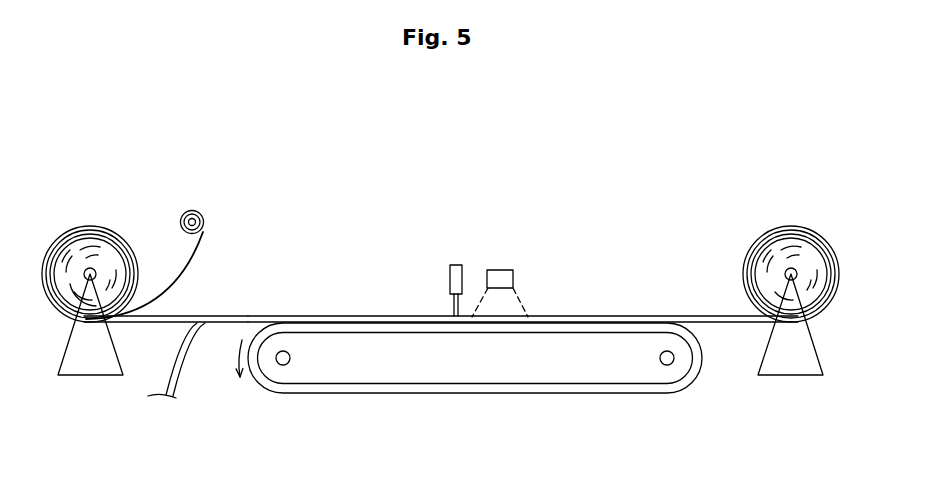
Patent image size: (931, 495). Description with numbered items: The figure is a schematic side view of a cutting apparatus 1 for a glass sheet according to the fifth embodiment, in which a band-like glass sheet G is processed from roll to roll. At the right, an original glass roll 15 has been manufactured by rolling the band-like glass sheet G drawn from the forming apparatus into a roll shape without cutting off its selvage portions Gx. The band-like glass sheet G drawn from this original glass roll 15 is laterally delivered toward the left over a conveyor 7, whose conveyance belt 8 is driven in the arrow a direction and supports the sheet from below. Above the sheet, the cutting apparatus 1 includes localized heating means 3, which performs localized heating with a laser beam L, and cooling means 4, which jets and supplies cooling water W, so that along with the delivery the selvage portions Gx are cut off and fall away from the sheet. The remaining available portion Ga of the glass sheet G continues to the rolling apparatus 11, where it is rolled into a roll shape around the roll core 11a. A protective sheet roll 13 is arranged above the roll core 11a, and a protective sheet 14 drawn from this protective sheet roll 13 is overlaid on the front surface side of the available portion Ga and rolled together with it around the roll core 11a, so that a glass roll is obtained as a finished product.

The cutting apparatus 1 is at (567, 242).
The localized heating means 3 is at (505, 267).
The cooling means 4 is at (457, 262).
The conveyor 7 is at (430, 362).
The conveyance belt 8 is at (498, 328).
The rolling apparatus 11 is at (70, 222).
The roll core 11a is at (97, 268).
The protective sheet roll 13 is at (205, 211).
The protective sheet 14 is at (188, 263).
The original glass roll 15 is at (812, 220).
The band-like glass sheet G is at (677, 315).
The available portion Ga is at (148, 324).
The selvage portion Gx is at (185, 347).
The laser beam L is at (523, 302).
The cooling water W is at (450, 296).
The arrow direction a is at (244, 370).